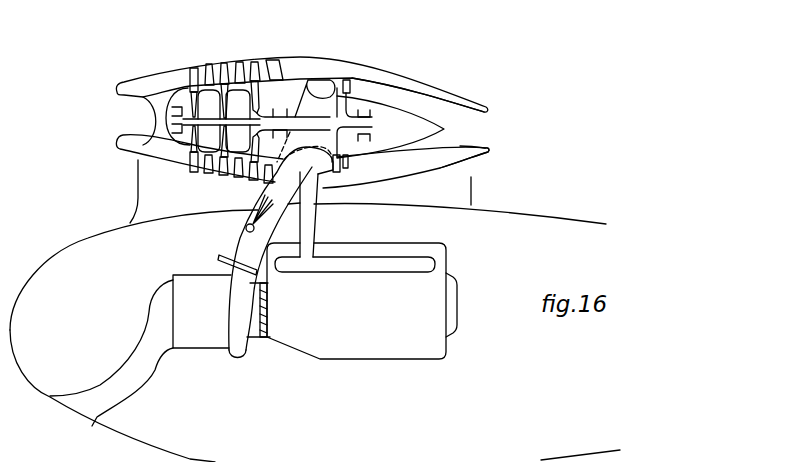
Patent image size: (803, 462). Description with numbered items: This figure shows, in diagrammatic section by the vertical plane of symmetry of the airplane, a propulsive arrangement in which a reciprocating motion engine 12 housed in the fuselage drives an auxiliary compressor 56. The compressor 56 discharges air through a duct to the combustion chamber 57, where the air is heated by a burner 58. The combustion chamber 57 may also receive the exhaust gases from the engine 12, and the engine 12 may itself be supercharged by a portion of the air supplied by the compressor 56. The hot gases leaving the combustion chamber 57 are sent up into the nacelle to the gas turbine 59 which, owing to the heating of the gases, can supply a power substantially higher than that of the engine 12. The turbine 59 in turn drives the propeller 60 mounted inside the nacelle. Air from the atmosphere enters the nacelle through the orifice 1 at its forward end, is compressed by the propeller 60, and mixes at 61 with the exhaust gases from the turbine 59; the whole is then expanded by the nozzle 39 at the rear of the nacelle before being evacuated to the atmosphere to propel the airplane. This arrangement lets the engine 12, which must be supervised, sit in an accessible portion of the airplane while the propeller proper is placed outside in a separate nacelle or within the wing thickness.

The orifice 1 is at (133, 115).
The reciprocating motion engine 12 is at (362, 301).
The nozzle 39 is at (480, 134).
The compressor 56 is at (202, 311).
The combustion chamber 57 is at (296, 172).
The burner 58 is at (246, 228).
The gas turbine 59 is at (348, 80).
The propeller 60 is at (224, 70).
The mixing zone 61 is at (369, 85).